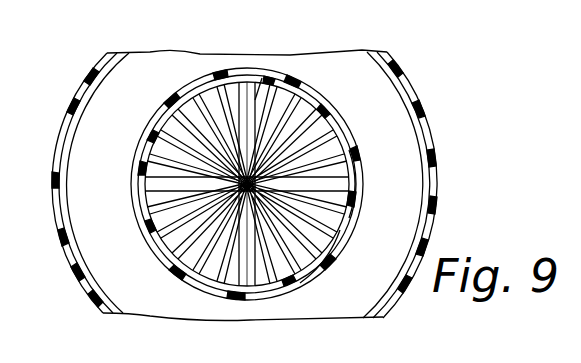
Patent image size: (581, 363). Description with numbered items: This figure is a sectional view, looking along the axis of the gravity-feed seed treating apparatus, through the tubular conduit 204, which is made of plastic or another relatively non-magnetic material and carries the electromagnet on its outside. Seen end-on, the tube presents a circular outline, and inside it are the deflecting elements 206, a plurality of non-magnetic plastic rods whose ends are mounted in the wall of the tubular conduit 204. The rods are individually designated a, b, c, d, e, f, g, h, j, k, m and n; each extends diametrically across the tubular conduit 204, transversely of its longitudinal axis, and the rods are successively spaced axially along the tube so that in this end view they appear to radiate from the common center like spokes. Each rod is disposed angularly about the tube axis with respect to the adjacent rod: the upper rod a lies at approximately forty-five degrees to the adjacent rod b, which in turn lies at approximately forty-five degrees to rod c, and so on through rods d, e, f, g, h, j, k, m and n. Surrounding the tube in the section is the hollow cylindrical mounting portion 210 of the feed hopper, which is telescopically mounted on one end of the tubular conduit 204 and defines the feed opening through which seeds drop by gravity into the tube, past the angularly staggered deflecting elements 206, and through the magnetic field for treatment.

The deflecting elements 206 is at (214, 72).
The mounting portion 210 is at (361, 203).
The tubular conduit 204 is at (340, 246).
The rod k is at (236, 78).
The rod e is at (132, 182).
The rod n is at (355, 153).
The rod h is at (345, 127).
The rod d is at (333, 100).
The rod m is at (302, 84).
The rod g is at (284, 78).
The rod c is at (263, 77).
The rod f is at (187, 88).
The rod b is at (162, 107).
The rod j is at (140, 133).
The rod a is at (133, 200).